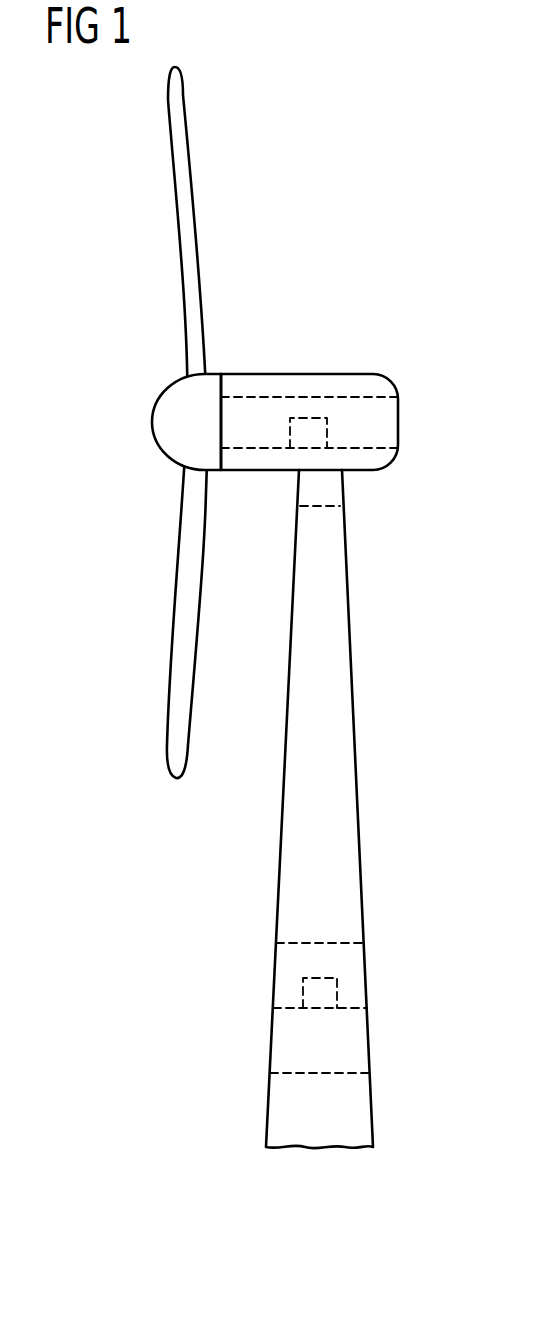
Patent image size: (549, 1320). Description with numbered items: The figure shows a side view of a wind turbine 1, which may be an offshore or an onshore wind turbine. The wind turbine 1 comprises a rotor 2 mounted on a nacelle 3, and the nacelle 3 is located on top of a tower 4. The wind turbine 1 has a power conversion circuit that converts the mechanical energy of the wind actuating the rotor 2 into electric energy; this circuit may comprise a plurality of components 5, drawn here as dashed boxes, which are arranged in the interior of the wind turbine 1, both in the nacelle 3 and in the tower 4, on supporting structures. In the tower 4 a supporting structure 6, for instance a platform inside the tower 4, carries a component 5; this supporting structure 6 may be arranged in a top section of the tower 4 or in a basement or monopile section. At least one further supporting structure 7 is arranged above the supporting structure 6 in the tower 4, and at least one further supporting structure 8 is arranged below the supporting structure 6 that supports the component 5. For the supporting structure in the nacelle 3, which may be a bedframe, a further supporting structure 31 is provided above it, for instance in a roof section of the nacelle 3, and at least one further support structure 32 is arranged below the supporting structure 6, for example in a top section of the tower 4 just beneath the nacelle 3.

The wind turbine 1 is at (375, 206).
The rotor 2 is at (150, 422).
The nacelle 3 is at (398, 420).
The further supporting structure 31 is at (357, 397).
The further support structure 32 is at (322, 507).
The tower 4 is at (351, 700).
The components 5 is at (303, 418).
The supporting structure 6 is at (245, 448).
The further supporting structure 7 is at (330, 1073).
The further supporting structure 8 is at (325, 943).